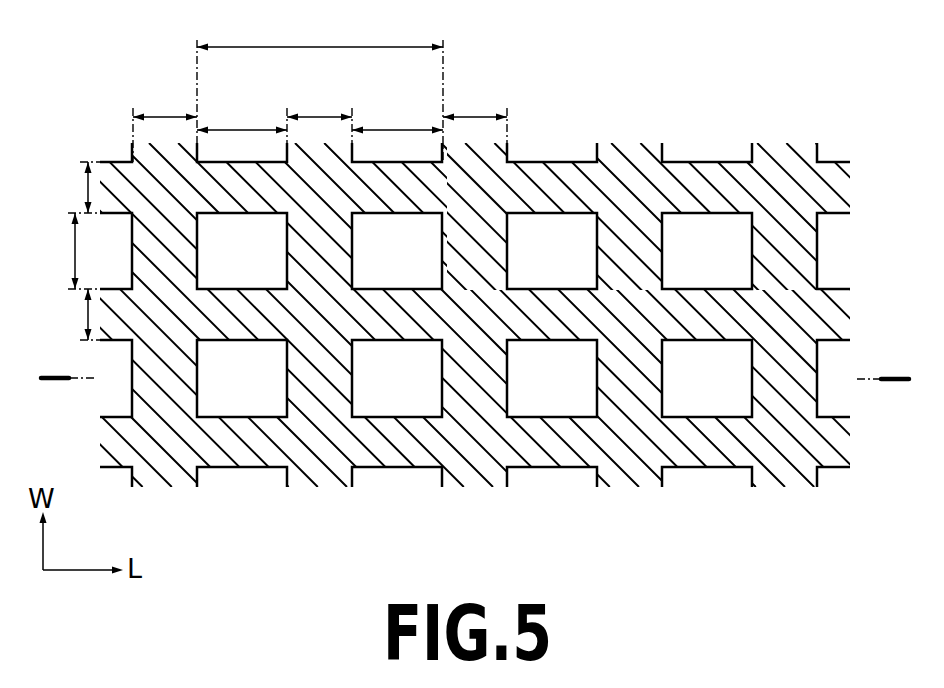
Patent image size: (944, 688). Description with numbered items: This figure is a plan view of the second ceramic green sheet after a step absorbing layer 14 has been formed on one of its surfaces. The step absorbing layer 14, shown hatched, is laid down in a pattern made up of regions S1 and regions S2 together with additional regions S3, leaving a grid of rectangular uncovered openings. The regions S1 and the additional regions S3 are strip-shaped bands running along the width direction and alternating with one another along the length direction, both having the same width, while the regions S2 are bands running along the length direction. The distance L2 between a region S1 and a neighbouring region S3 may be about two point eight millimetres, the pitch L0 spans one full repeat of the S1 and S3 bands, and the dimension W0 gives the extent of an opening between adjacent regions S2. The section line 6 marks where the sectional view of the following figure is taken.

The step absorbing layer 14 is at (790, 153).
The section line 6- 6 is at (897, 387).
The length-direction pitch dimension L0 is at (322, 47).
The region S1 is at (476, 117).
The distance between regions S1 and S3 L2 is at (406, 130).
The additional region S3 is at (329, 117).
The region S2 is at (88, 316).
The width-direction opening dimension W0 is at (75, 252).